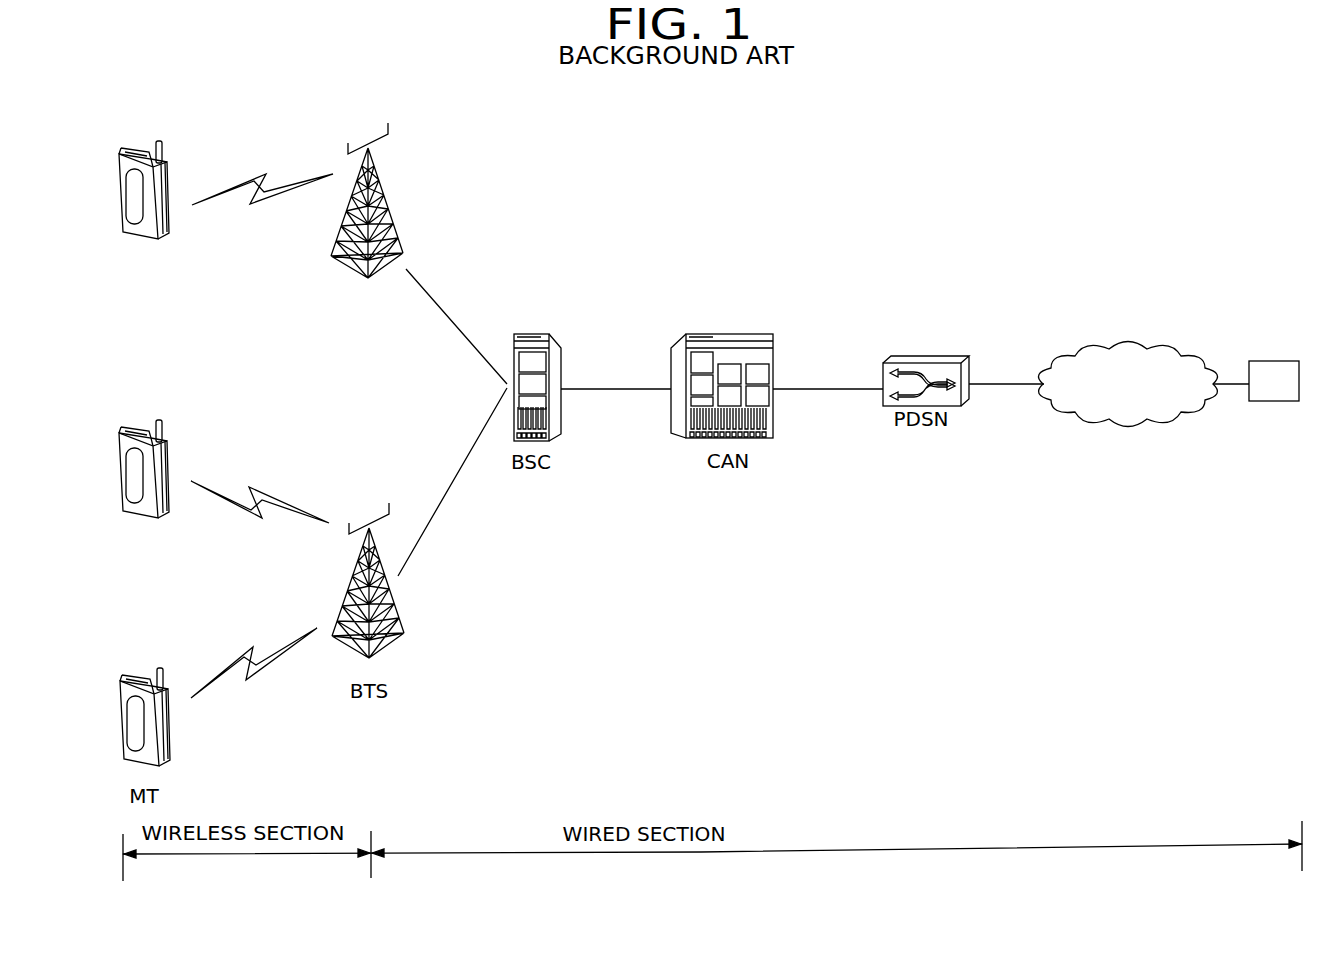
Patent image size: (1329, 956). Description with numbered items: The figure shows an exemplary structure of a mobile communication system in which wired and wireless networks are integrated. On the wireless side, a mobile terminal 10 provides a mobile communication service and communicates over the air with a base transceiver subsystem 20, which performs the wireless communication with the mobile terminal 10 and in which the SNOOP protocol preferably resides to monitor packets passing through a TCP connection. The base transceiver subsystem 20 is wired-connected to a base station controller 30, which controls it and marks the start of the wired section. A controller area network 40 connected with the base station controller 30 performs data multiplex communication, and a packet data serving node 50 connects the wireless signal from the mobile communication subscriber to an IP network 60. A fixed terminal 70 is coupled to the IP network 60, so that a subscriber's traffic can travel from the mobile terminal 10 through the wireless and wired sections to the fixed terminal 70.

The mobile terminal 10 is at (157, 140).
The base transceiver subsystem 20 is at (367, 147).
The base station controller 30 is at (530, 333).
The controller area network 40 is at (732, 333).
The packet data serving node 50 is at (931, 355).
The IP network 60 is at (1128, 347).
The fixed terminal 70 is at (1275, 360).